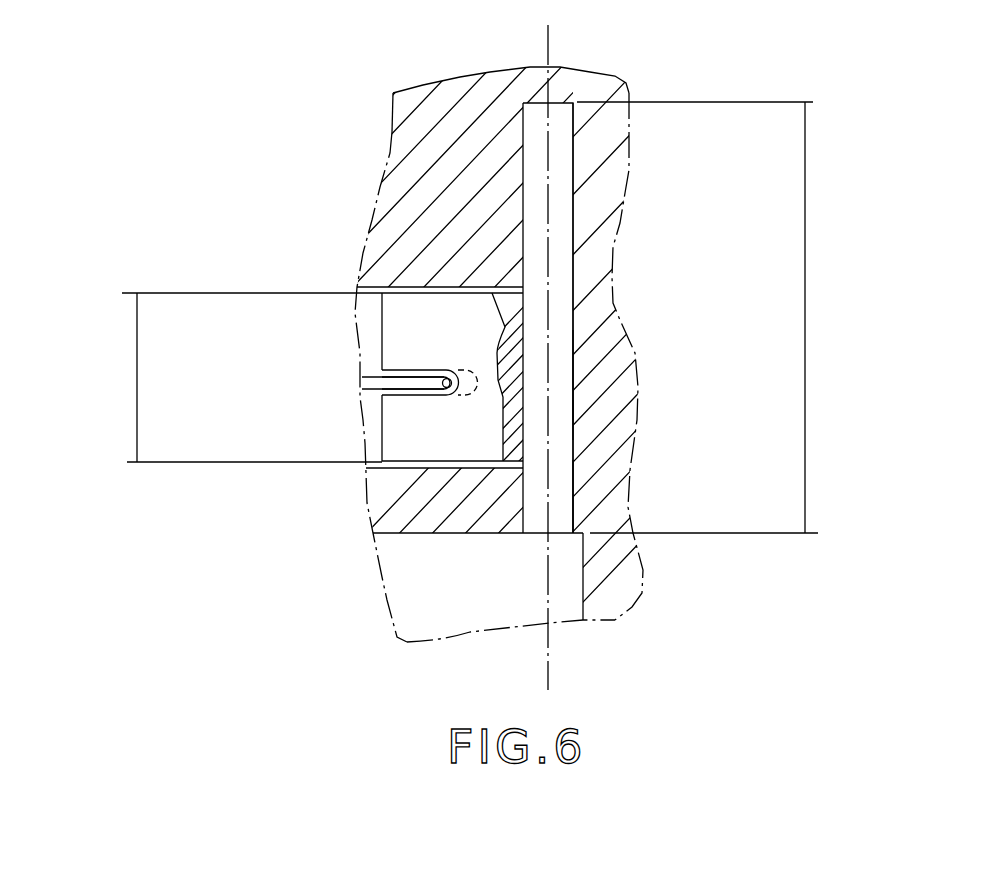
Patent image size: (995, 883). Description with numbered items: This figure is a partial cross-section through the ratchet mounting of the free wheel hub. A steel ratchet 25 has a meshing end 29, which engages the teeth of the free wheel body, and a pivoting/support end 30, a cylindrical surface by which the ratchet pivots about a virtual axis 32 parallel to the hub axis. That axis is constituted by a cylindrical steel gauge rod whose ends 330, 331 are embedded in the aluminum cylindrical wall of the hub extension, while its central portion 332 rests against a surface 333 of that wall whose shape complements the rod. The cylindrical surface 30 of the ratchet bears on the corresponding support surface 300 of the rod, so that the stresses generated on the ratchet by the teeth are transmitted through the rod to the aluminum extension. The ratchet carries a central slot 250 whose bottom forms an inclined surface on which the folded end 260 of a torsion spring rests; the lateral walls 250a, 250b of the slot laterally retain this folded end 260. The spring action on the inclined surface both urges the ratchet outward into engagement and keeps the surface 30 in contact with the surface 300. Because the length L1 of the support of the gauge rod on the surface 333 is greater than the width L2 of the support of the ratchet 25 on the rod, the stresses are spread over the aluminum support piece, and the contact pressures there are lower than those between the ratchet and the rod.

The ratchet 25 is at (403, 450).
The meshing end 29 is at (372, 318).
The pivoting/support end 30 is at (532, 318).
The virtual axis 32 is at (553, 667).
The central slot 250 is at (382, 383).
The lateral wall of the central slot 250a is at (421, 375).
The lateral wall of the central slot 250b is at (424, 392).
The folded support end 260 is at (459, 398).
The support surface of the gauge rod 300 is at (512, 401).
The end of the gauge rod 330 is at (563, 197).
The end of the gauge rod 331 is at (570, 500).
The central portion of the gauge rod 332 is at (562, 372).
The support surface of the cylindrical wall 333 is at (569, 416).
The support length of the gauge rod L1 is at (697, 317).
The support width of the ratchet L2 is at (236, 377).